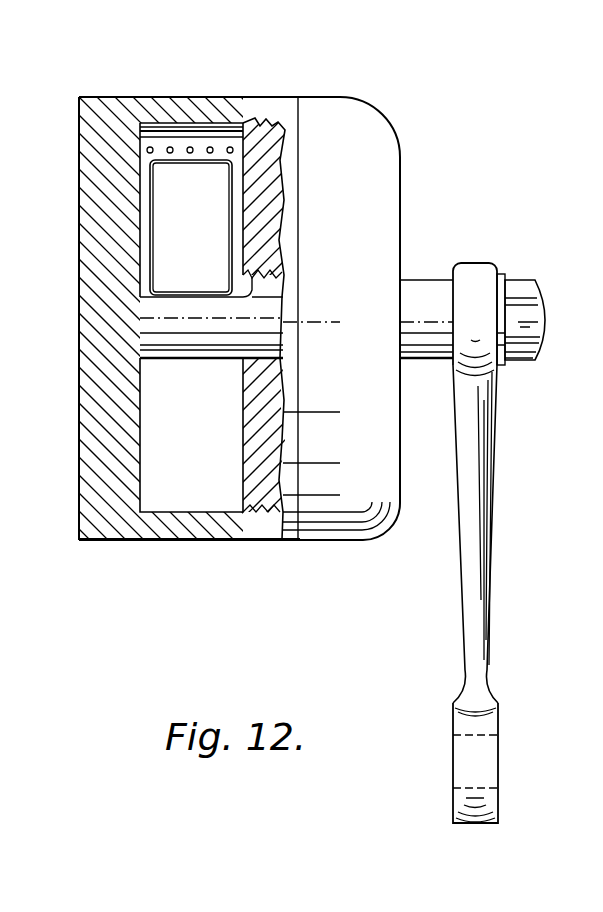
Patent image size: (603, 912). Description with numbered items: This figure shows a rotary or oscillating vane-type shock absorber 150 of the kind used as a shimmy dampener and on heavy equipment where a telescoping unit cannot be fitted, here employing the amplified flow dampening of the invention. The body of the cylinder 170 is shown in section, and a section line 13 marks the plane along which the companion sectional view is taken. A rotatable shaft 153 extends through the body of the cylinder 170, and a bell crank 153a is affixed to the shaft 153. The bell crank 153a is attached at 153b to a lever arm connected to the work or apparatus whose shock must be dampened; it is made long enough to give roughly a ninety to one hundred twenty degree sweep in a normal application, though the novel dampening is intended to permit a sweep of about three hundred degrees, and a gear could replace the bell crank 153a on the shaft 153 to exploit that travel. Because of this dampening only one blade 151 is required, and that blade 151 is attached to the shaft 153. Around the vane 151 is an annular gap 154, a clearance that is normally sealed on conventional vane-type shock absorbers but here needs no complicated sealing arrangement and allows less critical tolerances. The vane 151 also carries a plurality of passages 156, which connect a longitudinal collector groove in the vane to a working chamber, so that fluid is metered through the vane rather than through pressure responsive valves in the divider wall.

The section line 13- 13 is at (190, 627).
The vane-type shock absorber 150 is at (410, 105).
The blade 151 is at (175, 228).
The rotatable shaft 153 is at (432, 280).
The bell crank 153a is at (480, 548).
The attachment point of bell crank 153b is at (500, 778).
The annular gap 154 is at (194, 123).
The passages 156 is at (170, 153).
The body of the cylinder 170 is at (177, 528).